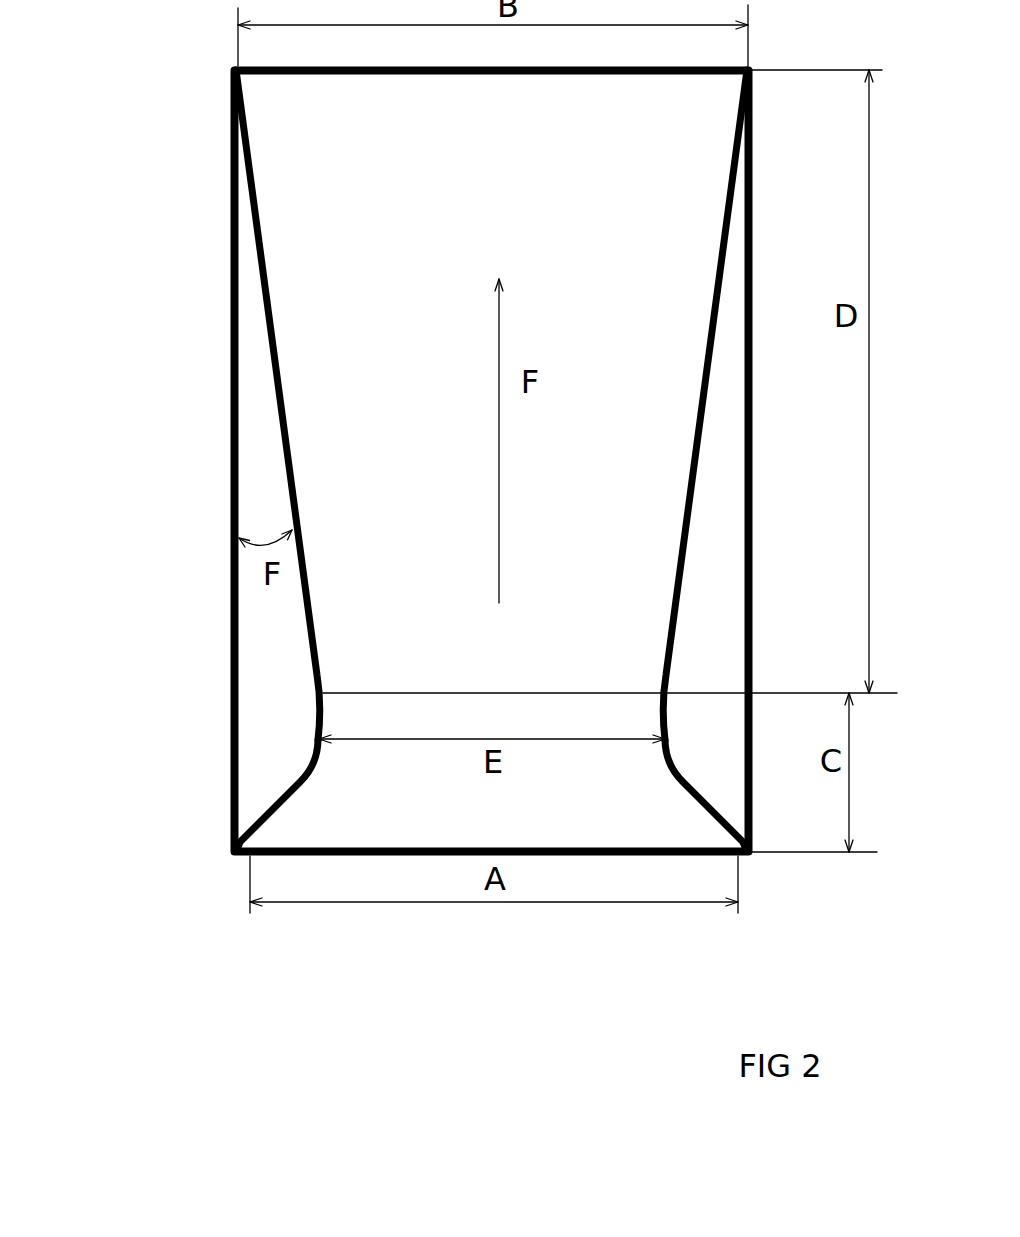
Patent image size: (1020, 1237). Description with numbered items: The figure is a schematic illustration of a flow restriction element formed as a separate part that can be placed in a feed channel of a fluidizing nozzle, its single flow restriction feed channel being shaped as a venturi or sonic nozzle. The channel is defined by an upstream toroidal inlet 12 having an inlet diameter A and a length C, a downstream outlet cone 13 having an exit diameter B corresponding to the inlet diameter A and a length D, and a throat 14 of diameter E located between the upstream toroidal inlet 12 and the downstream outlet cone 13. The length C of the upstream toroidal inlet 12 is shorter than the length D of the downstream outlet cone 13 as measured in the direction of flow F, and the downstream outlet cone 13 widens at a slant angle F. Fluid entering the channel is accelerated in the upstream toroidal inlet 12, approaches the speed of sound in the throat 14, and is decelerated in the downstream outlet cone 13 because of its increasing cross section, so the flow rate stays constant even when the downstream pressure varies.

The upstream toroidal inlet 12 is at (345, 760).
The downstream outlet cone 13 is at (430, 280).
The throat 14 is at (418, 691).